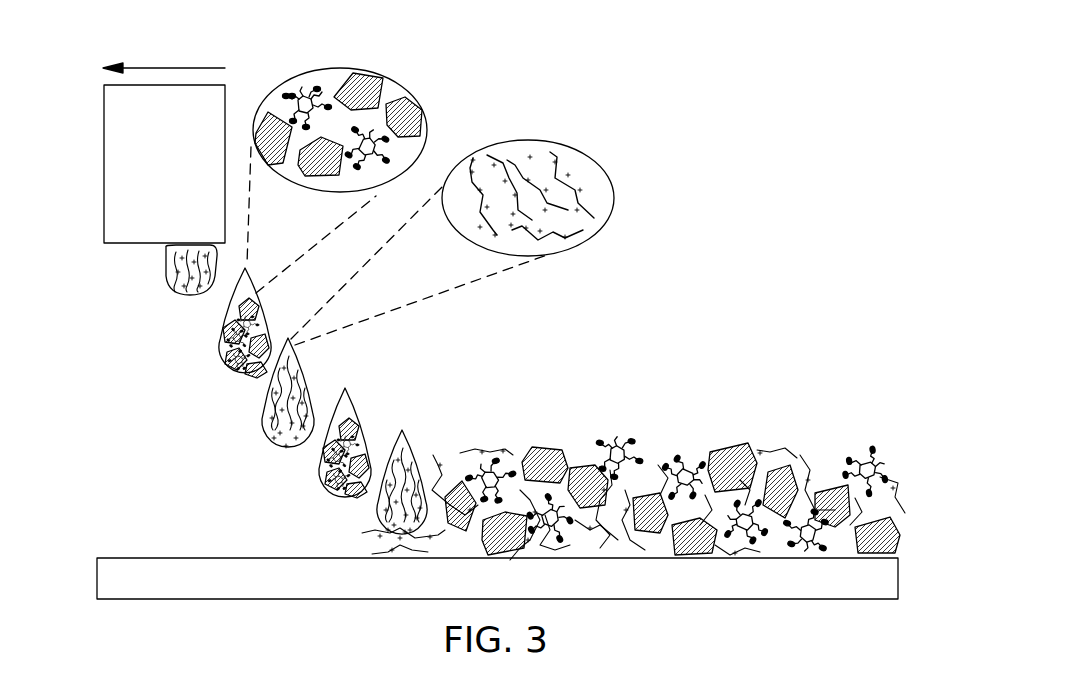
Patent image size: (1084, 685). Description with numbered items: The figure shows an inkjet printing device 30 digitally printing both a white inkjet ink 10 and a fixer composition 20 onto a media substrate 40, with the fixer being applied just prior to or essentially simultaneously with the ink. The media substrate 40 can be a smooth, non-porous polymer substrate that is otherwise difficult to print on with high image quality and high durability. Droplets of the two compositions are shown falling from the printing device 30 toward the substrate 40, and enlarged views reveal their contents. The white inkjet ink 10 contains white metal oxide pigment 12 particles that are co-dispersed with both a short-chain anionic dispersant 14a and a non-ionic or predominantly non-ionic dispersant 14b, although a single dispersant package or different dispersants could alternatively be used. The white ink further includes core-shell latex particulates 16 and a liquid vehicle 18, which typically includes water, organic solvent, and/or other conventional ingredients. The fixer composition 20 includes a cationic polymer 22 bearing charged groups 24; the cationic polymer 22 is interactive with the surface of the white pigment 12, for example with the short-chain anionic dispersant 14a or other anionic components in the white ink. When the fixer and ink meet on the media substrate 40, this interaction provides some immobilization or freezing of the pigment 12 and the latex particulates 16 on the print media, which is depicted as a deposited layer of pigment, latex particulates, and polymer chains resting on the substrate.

The white inkjet ink 10 is at (433, 122).
The white metal oxide pigment 12 is at (315, 102).
The short-chain anionic dispersant 14a is at (300, 95).
The non-ionic or predominantly non-ionic dispersant 14b is at (325, 98).
The latex particulates 16 is at (363, 73).
The liquid vehicle 18 is at (280, 105).
The fixer composition 20 is at (620, 178).
The cationic polymer 22 is at (552, 154).
The charged group 24 is at (523, 150).
The inkjet printing device 30 is at (176, 175).
The media substrate 40 is at (511, 590).